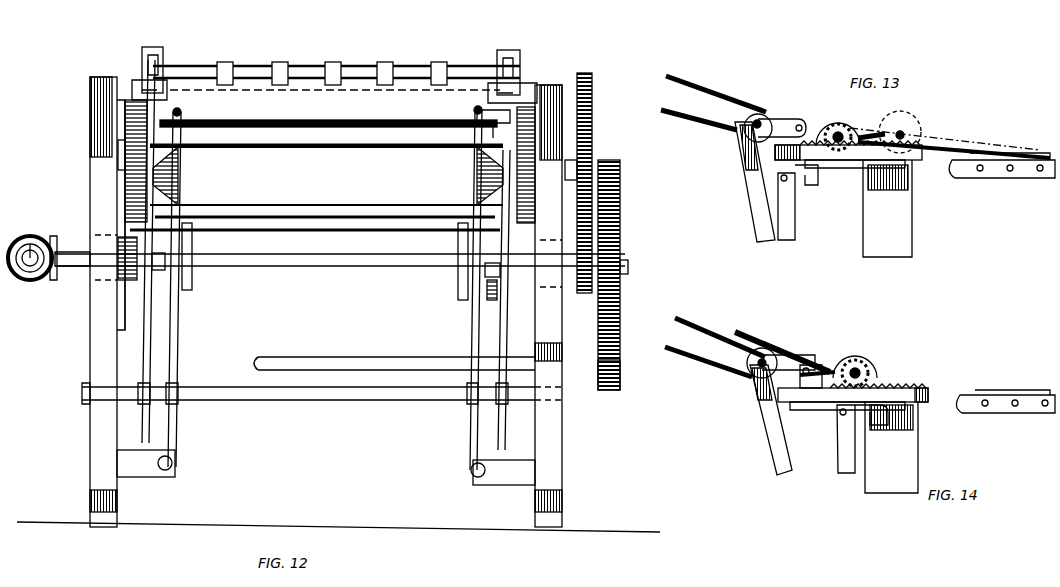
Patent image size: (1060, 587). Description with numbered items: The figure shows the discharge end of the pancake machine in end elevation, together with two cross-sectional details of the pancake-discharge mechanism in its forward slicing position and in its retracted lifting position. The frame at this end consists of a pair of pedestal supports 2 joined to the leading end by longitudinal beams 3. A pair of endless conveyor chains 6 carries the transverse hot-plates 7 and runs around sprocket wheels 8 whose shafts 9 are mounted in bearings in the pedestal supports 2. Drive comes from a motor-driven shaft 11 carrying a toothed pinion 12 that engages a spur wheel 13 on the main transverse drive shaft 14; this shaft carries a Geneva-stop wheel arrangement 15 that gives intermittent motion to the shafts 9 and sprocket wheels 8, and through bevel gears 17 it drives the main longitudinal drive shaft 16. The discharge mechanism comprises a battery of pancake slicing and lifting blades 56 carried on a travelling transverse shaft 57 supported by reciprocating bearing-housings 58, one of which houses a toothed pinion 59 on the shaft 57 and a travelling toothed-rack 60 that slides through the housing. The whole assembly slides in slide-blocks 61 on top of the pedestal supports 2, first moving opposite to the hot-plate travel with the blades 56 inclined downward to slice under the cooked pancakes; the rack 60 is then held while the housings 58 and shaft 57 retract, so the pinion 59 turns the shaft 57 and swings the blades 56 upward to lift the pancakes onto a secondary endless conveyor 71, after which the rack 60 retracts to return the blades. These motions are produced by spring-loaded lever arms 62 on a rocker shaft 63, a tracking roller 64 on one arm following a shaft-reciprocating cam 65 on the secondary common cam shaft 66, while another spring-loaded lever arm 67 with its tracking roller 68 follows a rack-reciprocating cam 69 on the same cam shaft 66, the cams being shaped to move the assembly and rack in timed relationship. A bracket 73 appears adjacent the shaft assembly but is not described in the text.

In FIG. 12, the pedestal supports 2 is at (92, 445).
In FIG. 13, the pedestal supports 2 is at (900, 232).
In FIG. 14, the pedestal supports 2 is at (905, 445).
In FIG. 12, the longitudinal beams 3 is at (98, 235).
In FIG. 13, the endless conveyor chains 6 is at (1030, 175).
In FIG. 14, the endless conveyor chains 6 is at (1000, 410).
In FIG. 12, the hot-plates 7 is at (316, 175).
In FIG. 13, the hot-plates 7 is at (1040, 153).
In FIG. 14, the hot-plates 7 is at (996, 390).
In FIG. 12, the sprocket wheels 8 is at (125, 132).
In FIG. 12, the shafts of the sprocket wheels 9 is at (118, 150).
In FIG. 12, the shaft 11 is at (323, 356).
In FIG. 12, the toothed pinion 12 is at (607, 386).
In FIG. 12, the spur wheel 13 is at (502, 33).
In FIG. 12, the main transverse drive shaft 14 is at (628, 268).
In FIG. 12, the Geneva-stop wheel arrangement 15 is at (592, 112).
In FIG. 12, the main longitudinal drive shaft 16 is at (31, 236).
In FIG. 12, the bevel gears 17 is at (28, 280).
In FIG. 12, the pancake slicing and lifting blades 56 is at (280, 66).
In FIG. 13, the pancake slicing and lifting blades 56 is at (965, 145).
In FIG. 14, the pancake slicing and lifting blades 56 is at (760, 340).
In FIG. 12, the travelling transverse shaft 57 is at (320, 66).
In FIG. 13, the travelling transverse shaft 57 is at (890, 125).
In FIG. 14, the travelling transverse shaft 57 is at (875, 372).
In FIG. 12, the reciprocating bearing-housings 58 is at (152, 50).
In FIG. 13, the reciprocating bearing-housings 58 is at (828, 120).
In FIG. 14, the reciprocating bearing-housings 58 is at (850, 351).
In FIG. 13, the toothed pinion 59 is at (840, 125).
In FIG. 14, the toothed pinion 59 is at (868, 362).
In FIG. 13, the travelling toothed-rack 60 is at (838, 160).
In FIG. 14, the travelling toothed-rack 60 is at (905, 388).
In FIG. 12, the slide-blocks 61 is at (200, 98).
In FIG. 13, the slide-blocks 61 is at (905, 168).
In FIG. 14, the slide-blocks 61 is at (810, 402).
In FIG. 12, the spring-loaded lever arms 62 is at (152, 205).
In FIG. 13, the spring-loaded lever arms 62 is at (755, 193).
In FIG. 14, the spring-loaded lever arms 62 is at (770, 458).
In FIG. 12, the rocker shaft 63 is at (214, 383).
In FIG. 12, the tracking roller 64 is at (170, 300).
In FIG. 12, the shaft-reciprocating cam 65 is at (128, 282).
In FIG. 12, the secondary common cam shaft 66 is at (303, 268).
In FIG. 12, the spring-loaded lever arm 67 is at (182, 305).
In FIG. 13, the spring-loaded lever arm 67 is at (796, 226).
In FIG. 14, the spring-loaded lever arm 67 is at (843, 475).
In FIG. 12, the tracking roller 68 is at (170, 272).
In FIG. 12, the rack-reciprocating cam 69 is at (195, 244).
In FIG. 13, the secondary endless conveyor 71 is at (740, 102).
In FIG. 14, the secondary endless conveyor 71 is at (718, 325).
In FIG. 12, the bracket 73 is at (490, 128).